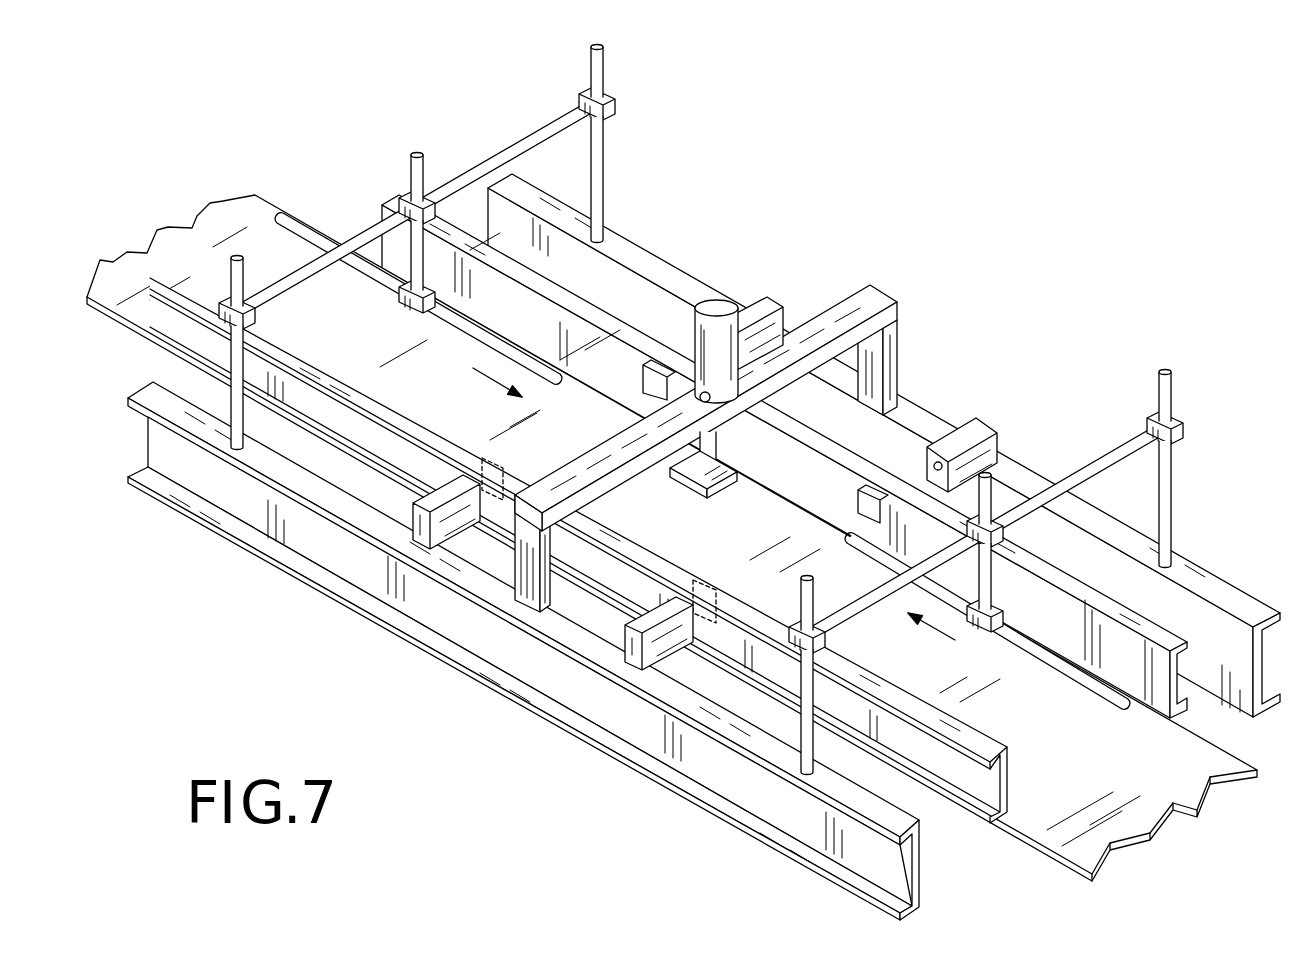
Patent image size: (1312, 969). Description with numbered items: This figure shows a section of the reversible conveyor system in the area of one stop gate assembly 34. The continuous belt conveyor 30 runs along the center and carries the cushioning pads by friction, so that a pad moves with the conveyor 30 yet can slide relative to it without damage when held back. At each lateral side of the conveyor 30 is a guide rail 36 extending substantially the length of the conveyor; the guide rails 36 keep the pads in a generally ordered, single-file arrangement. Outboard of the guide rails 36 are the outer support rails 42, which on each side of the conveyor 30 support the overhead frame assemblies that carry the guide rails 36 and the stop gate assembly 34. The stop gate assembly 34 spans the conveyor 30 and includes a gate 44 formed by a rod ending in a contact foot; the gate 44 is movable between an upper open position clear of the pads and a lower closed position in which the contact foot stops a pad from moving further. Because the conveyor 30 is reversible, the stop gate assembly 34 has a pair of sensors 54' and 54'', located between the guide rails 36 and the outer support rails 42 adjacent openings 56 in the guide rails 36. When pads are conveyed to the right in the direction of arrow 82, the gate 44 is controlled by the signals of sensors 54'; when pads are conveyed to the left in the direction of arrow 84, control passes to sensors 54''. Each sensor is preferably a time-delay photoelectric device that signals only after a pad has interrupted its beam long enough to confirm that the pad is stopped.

The conveyor 30 is at (1145, 800).
The stop gate assembly 34 is at (903, 312).
The guide rail 36 is at (1133, 614).
The outer support rail 42 is at (1233, 598).
The gate 44 is at (681, 487).
The sensor 54' is at (795, 588).
The sensor 54'' is at (571, 460).
The opening 56 is at (643, 372).
The arrow 82 is at (473, 370).
The arrow 84 is at (955, 640).